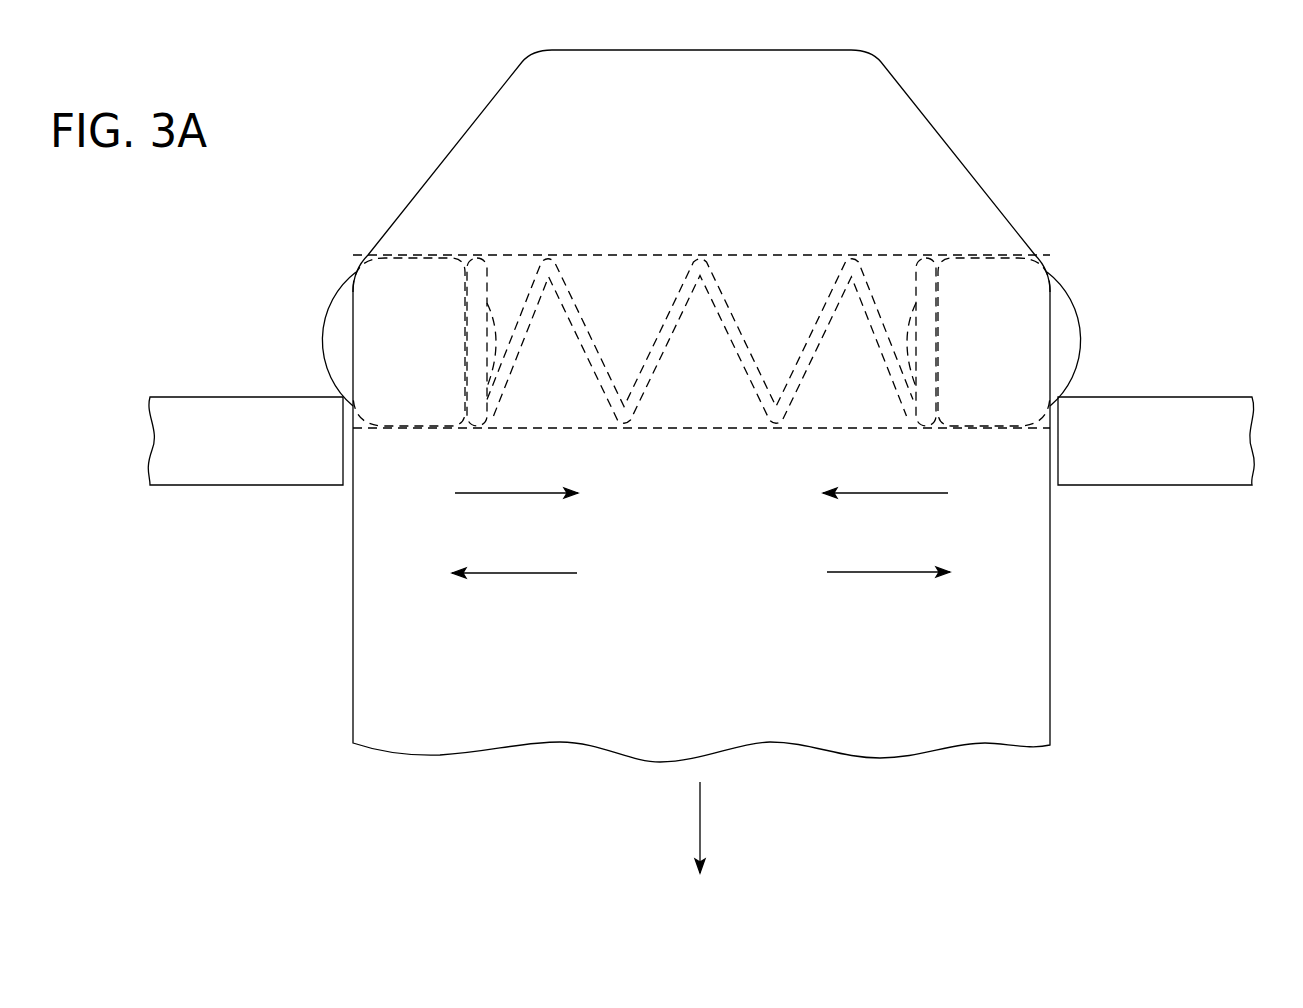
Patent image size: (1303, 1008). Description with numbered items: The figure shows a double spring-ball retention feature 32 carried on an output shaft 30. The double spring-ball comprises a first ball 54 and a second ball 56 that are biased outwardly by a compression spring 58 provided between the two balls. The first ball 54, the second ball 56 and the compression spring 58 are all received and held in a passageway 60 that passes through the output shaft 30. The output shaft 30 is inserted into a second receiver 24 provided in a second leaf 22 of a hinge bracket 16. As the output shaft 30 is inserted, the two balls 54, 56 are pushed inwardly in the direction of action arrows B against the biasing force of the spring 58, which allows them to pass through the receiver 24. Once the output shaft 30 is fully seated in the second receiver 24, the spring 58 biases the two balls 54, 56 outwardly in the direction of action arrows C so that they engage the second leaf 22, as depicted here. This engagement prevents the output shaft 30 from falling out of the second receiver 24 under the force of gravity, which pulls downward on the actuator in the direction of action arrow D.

The hinge bracket 16 is at (1200, 487).
The second leaf 22 is at (218, 422).
The second receiver 24 is at (1058, 446).
The output shaft 30 is at (410, 633).
The retention feature 32 is at (1052, 190).
The first ball 54 is at (330, 318).
The second ball 56 is at (1069, 314).
The compression spring 58 is at (728, 305).
The passageway 60 is at (703, 430).
The action arrows B is at (497, 495).
The action arrows C is at (525, 575).
The action arrow D is at (701, 822).